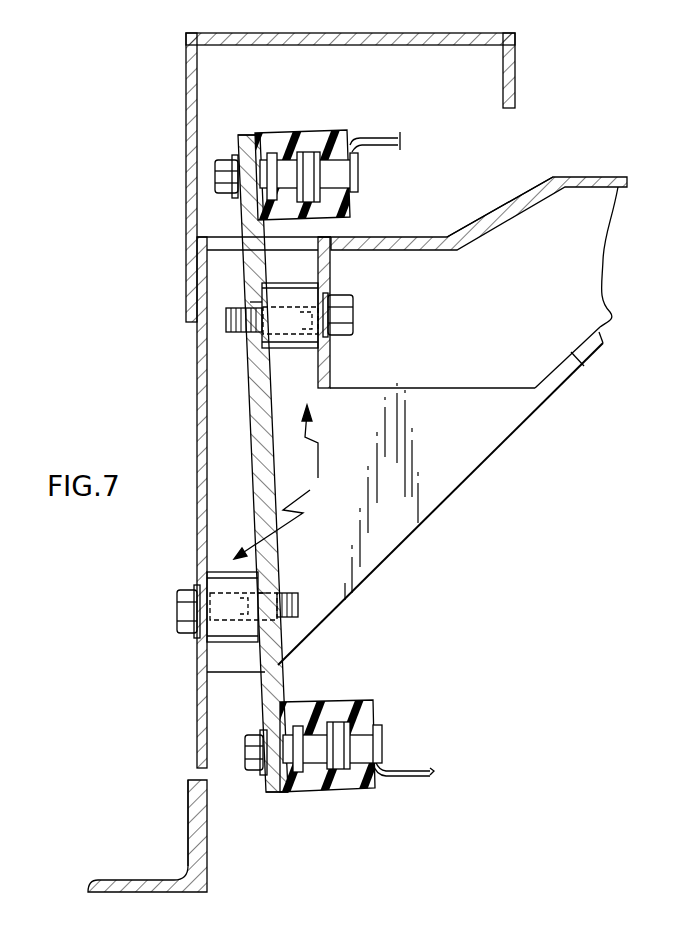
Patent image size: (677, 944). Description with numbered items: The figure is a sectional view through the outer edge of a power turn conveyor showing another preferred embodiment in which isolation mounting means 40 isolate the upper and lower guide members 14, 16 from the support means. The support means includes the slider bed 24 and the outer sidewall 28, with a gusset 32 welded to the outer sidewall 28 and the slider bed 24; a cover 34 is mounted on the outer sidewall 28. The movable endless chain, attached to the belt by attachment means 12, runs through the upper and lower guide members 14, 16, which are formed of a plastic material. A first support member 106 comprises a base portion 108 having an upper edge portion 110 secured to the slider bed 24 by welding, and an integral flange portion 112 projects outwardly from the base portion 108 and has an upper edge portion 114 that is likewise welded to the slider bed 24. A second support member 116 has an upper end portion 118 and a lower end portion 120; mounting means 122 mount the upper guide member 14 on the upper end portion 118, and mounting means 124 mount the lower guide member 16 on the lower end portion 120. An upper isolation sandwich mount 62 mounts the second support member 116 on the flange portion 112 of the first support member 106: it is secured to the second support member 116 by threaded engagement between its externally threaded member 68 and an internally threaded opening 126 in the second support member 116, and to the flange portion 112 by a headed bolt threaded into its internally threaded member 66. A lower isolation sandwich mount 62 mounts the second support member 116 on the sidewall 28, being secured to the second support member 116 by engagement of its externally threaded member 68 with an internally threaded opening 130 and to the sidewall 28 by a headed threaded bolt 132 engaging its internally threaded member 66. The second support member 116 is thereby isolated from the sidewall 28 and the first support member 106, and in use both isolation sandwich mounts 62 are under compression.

The attachment means 12 is at (403, 782).
The upper guide member 14 is at (312, 133).
The lower guide member 16 is at (327, 790).
The slider bed 24 is at (585, 178).
The outer sidewall 28 is at (197, 436).
The gusset 32 is at (399, 543).
The cover 34 is at (460, 46).
The isolation mounting means 40 is at (289, 482).
The isolation sandwich mount 62 is at (295, 348).
The internally threaded member 66 is at (328, 350).
The externally threaded member 68 is at (236, 332).
The first support member 106 is at (583, 366).
The base portion 108 is at (504, 336).
The upper edge portion 110 is at (536, 200).
The flange portion 112 is at (333, 375).
The upper edge portion 114 is at (323, 250).
The second support member 116 is at (256, 490).
The upper end portion 118 is at (242, 135).
The lower end portion 120 is at (273, 790).
The mounting means 122 is at (238, 197).
The mounting means 124 is at (252, 734).
The internally threaded opening 126 is at (252, 302).
The internally threaded opening 130 is at (267, 594).
The headed threaded bolt 132 is at (186, 634).